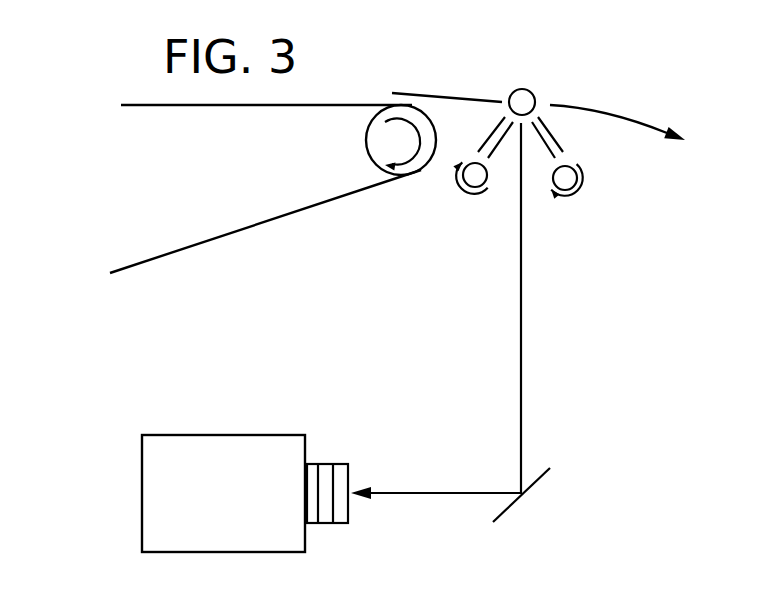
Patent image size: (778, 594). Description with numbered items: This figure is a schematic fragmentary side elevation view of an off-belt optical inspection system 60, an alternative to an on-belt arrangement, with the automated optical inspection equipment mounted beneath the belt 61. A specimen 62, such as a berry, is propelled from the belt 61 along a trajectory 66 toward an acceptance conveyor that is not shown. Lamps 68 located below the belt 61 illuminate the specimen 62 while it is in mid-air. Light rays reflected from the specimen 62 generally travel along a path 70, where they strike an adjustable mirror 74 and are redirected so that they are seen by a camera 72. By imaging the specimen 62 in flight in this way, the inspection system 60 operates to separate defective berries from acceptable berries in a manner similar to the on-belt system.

The off-belt inspection system 60 is at (330, 337).
The belt 61 is at (292, 215).
The specimen 62 is at (527, 90).
The trajectory 66 is at (600, 115).
The lamps 68 is at (465, 198).
The path 70 is at (522, 297).
The camera 72 is at (230, 435).
The adjustable mirror 74 is at (518, 499).